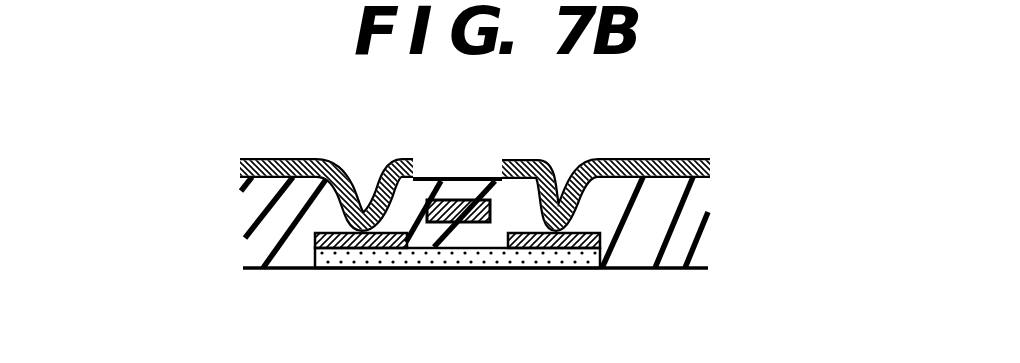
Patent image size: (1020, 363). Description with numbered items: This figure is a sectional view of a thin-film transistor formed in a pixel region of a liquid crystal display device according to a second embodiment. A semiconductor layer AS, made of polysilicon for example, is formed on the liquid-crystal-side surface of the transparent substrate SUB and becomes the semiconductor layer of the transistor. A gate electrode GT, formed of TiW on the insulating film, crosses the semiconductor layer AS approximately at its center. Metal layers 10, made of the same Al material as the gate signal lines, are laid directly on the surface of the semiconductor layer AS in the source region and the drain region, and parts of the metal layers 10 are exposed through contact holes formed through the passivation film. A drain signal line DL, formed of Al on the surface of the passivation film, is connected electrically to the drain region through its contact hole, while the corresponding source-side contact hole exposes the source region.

The gate electrode GT is at (456, 200).
The drain signal line DL is at (665, 158).
The transparent substrate SUB is at (682, 288).
The metal layer 10 is at (360, 248).
The semiconductor layer AS is at (450, 270).